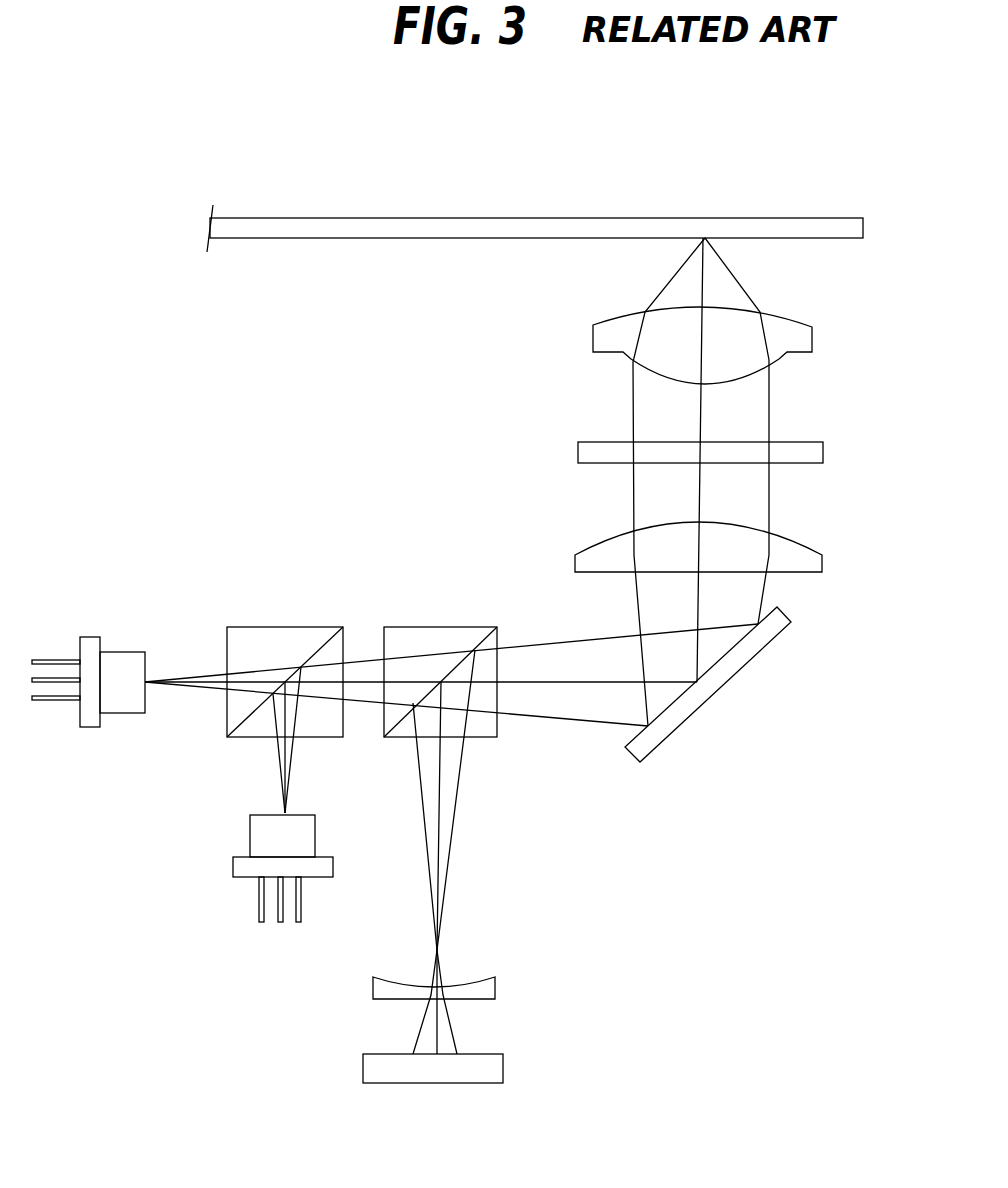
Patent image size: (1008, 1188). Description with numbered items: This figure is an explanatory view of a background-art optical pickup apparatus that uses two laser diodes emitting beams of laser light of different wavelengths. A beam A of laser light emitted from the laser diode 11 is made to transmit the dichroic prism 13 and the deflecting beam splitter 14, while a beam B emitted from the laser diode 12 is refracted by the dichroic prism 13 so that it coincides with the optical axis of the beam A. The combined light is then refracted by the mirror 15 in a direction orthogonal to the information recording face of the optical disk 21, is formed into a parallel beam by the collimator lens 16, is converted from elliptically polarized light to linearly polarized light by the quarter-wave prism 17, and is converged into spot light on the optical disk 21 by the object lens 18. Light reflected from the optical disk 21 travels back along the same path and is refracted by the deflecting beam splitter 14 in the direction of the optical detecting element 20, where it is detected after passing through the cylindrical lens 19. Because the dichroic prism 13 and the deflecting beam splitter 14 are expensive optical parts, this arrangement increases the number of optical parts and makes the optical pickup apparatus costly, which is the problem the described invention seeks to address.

The laser diode 11 is at (91, 637).
The laser diode 12 is at (233, 867).
The dichroic prism 13 is at (285, 627).
The deflecting beam splitter 14 is at (441, 627).
The mirror 15 is at (708, 697).
The collimator lens 16 is at (813, 553).
The quarter-wave prism 17 is at (808, 442).
The object lens 18 is at (800, 323).
The cylindrical lens 19 is at (495, 988).
The optical detecting element 20 is at (503, 1068).
The optical disk 21 is at (832, 217).
The beam of laser light A is at (207, 697).
The beam of laser light B is at (270, 776).